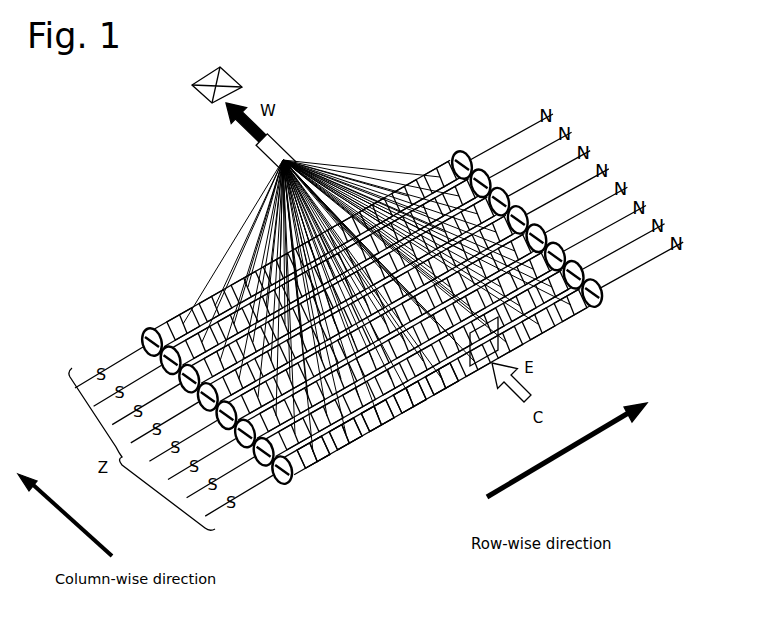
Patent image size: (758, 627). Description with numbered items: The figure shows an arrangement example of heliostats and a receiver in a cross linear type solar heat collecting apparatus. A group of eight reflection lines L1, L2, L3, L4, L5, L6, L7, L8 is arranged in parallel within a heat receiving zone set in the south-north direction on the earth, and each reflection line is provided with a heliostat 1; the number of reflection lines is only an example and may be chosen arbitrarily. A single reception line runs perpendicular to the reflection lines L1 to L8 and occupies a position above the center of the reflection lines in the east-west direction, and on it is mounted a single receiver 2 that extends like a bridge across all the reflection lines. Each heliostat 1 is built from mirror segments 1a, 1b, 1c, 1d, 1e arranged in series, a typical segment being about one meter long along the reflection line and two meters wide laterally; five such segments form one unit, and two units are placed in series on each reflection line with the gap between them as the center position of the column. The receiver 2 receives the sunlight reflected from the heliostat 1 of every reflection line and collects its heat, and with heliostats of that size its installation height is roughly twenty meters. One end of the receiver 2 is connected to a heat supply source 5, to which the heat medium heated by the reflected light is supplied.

The heliostat 1 is at (391, 304).
The mirror segment 1a is at (308, 468).
The mirror segment 1b is at (340, 450).
The mirror segment 1c is at (372, 432).
The mirror segment 1d is at (404, 413).
The mirror segment 1e is at (436, 395).
The receiver 2 is at (282, 147).
The heat supply source 5 is at (230, 84).
The reflection line L1 is at (324, 240).
The reflection line L2 is at (344, 259).
The reflection line L3 is at (362, 277).
The reflection line L4 is at (381, 296).
The reflection line L5 is at (399, 314).
The reflection line L6 is at (418, 333).
The reflection line L7 is at (438, 351).
The reflection line L8 is at (316, 502).